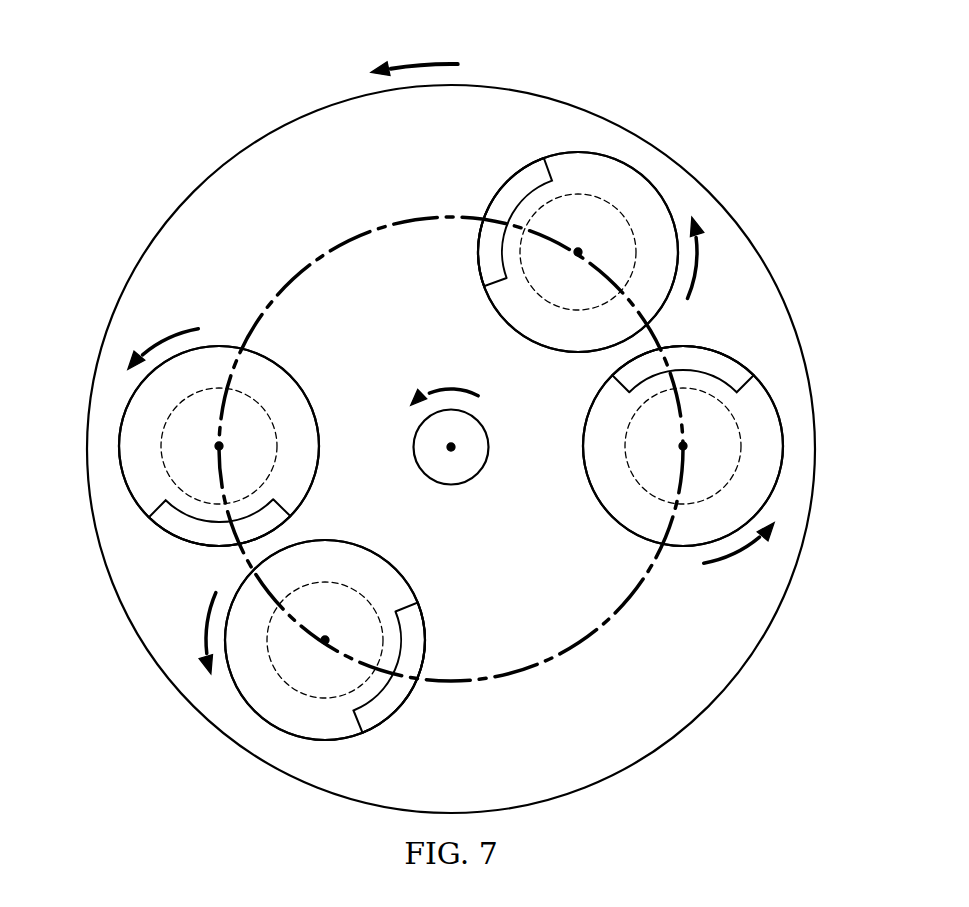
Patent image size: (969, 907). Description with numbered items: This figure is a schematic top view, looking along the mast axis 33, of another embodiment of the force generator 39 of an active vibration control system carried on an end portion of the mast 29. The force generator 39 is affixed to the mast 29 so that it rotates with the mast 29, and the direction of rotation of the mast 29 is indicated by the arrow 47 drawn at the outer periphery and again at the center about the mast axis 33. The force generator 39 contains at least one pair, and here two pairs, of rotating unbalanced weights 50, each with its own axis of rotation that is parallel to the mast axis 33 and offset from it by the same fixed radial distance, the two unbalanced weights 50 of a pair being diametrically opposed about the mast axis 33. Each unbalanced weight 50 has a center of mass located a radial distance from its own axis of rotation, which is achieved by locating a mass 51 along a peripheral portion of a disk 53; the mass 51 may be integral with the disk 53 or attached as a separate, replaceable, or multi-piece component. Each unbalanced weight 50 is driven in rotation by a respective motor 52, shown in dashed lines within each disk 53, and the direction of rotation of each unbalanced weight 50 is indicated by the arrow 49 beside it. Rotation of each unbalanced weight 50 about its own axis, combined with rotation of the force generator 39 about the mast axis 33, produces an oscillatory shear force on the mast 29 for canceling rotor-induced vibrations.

The mast 29 is at (462, 485).
The mast axis 33 is at (446, 450).
The force generator 39 is at (521, 87).
The arrow 47 is at (415, 63).
The arrow 49 is at (162, 338).
The unbalanced weight 50 is at (624, 148).
The mass 51 is at (512, 194).
The motor 52 is at (276, 436).
The disk 53 is at (217, 346).